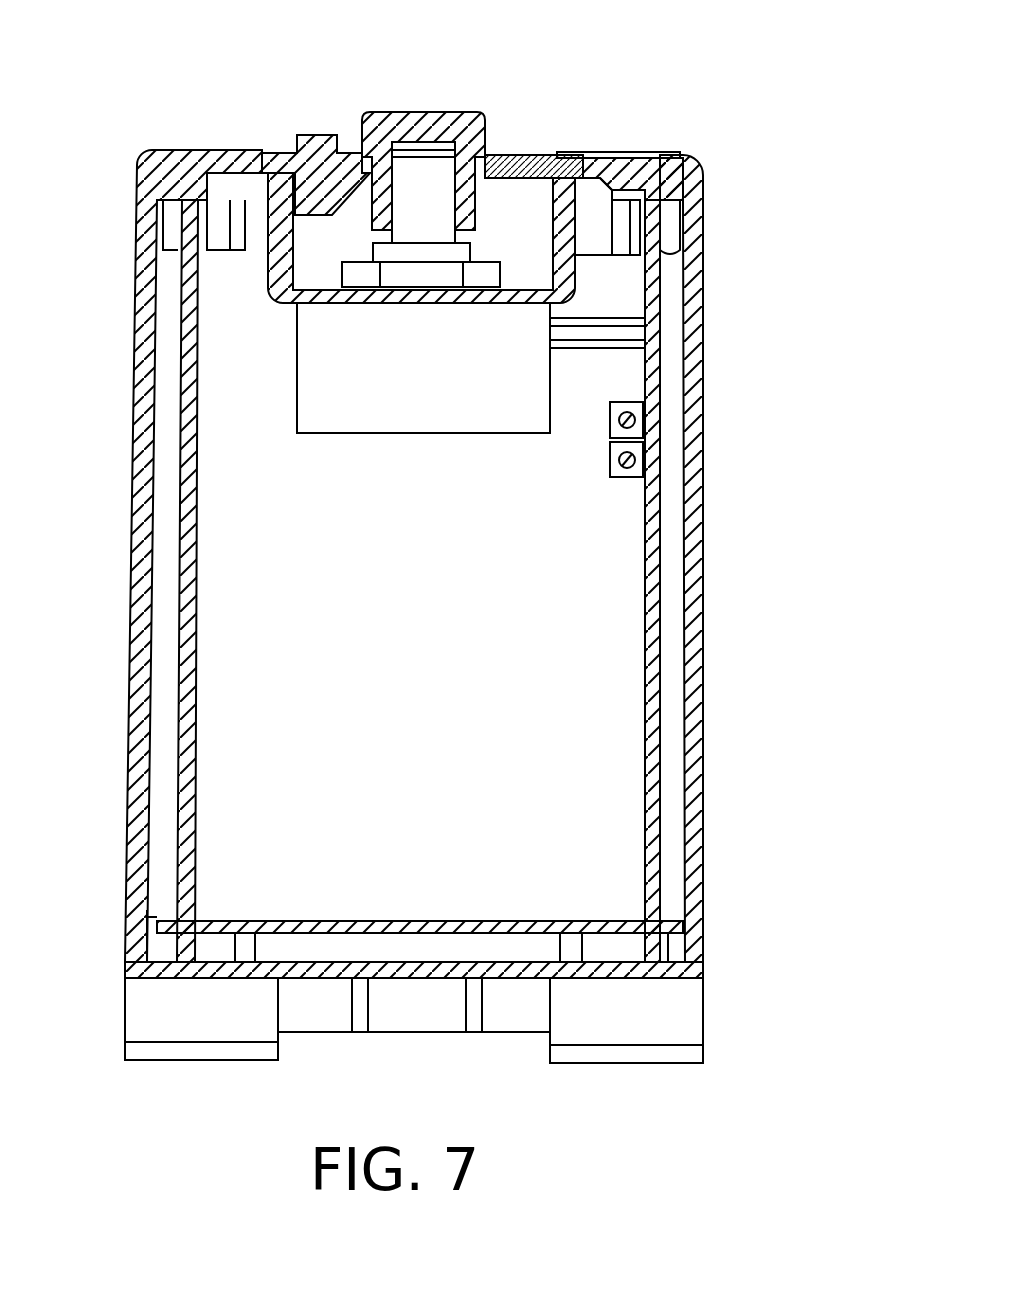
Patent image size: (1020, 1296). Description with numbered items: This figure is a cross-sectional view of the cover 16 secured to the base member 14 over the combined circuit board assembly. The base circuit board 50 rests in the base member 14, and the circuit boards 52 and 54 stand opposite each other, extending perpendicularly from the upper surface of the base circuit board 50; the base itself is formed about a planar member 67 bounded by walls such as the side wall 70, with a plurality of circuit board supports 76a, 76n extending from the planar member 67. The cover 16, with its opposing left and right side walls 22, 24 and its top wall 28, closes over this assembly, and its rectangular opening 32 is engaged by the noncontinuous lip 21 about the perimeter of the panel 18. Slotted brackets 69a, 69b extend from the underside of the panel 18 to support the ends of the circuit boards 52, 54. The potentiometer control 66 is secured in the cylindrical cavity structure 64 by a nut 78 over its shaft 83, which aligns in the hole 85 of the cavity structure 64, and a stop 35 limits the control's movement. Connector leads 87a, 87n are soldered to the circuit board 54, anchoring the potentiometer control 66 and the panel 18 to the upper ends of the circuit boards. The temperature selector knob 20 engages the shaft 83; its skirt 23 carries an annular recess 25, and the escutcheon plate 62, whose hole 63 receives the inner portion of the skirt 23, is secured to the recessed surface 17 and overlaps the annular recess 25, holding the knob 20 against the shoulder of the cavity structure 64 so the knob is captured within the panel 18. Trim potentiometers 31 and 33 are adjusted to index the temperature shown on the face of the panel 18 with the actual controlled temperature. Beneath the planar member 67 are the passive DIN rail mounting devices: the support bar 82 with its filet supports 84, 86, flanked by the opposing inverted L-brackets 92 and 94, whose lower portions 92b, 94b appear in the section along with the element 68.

The base member 14 is at (730, 1015).
The cover 16 is at (738, 603).
The recessed surface 17 is at (647, 124).
The panel 18 is at (664, 124).
The temperature selector knob 20 is at (434, 148).
The noncontinuous lip 21 is at (673, 190).
The left side wall 22 is at (722, 558).
The skirt 23 is at (534, 103).
The right side wall 24 is at (150, 556).
The annular recess 25 is at (610, 145).
The top wall 28 is at (442, 630).
The trim potentiometer 31 is at (608, 427).
The rectangular opening 32 is at (718, 145).
The trim potentiometer 33 is at (599, 486).
The stop 35 is at (331, 235).
The base circuit board 50 is at (415, 903).
The circuit board 52 is at (221, 581).
The circuit board 54 is at (619, 581).
The escutcheon plate 62 is at (642, 115).
The hole 63 is at (295, 152).
The cylindrical cavity structure 64 is at (534, 247).
The potentiometer control 66 is at (442, 395).
The planar member 67 is at (393, 973).
The flange 68 is at (720, 929).
The slotted bracket 69a is at (176, 178).
The slotted bracket 69b is at (615, 225).
The side wall 70 is at (101, 935).
The circuit board support 76a is at (145, 953).
The circuit board support 76n is at (622, 1019).
The nut 78 is at (348, 277).
The support bar 82 is at (414, 1034).
The shaft 83 is at (444, 230).
The filet support 84 is at (502, 1034).
The hole 85 is at (421, 292).
The filet support 86 is at (329, 1026).
The connector lead 87a is at (615, 348).
The connector lead 87n is at (612, 322).
The inverted L-bracket 92 is at (685, 1013).
The foot pad 92b is at (670, 1076).
The inverted L-bracket 94 is at (177, 1032).
The foot pad 94b is at (252, 1055).